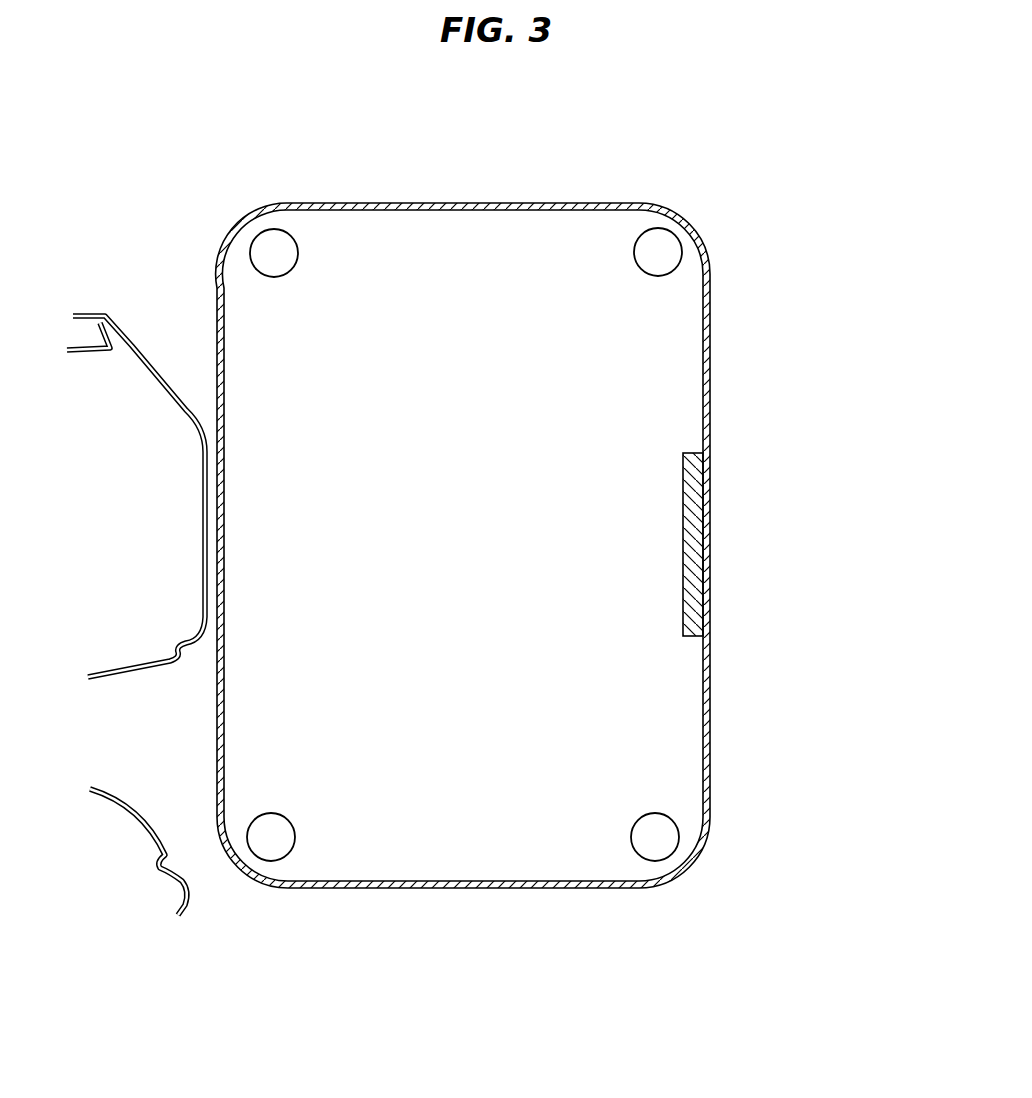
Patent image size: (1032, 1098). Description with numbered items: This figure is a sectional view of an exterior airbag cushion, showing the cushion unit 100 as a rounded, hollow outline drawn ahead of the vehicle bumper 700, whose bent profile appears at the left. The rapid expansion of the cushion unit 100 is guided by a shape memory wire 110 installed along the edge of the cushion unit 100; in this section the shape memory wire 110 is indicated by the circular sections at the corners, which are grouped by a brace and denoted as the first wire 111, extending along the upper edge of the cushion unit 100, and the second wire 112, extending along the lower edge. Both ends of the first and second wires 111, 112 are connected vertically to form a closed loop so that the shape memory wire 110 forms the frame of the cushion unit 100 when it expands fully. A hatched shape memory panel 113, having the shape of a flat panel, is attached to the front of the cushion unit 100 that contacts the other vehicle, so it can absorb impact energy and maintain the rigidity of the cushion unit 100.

The cushion unit 100 is at (452, 237).
The shape memory wire 110 is at (840, 447).
The first wire 111 is at (658, 252).
The second wire 112 is at (655, 837).
The shape memory panel 113 is at (683, 600).
The vehicle bumper 700 is at (135, 662).